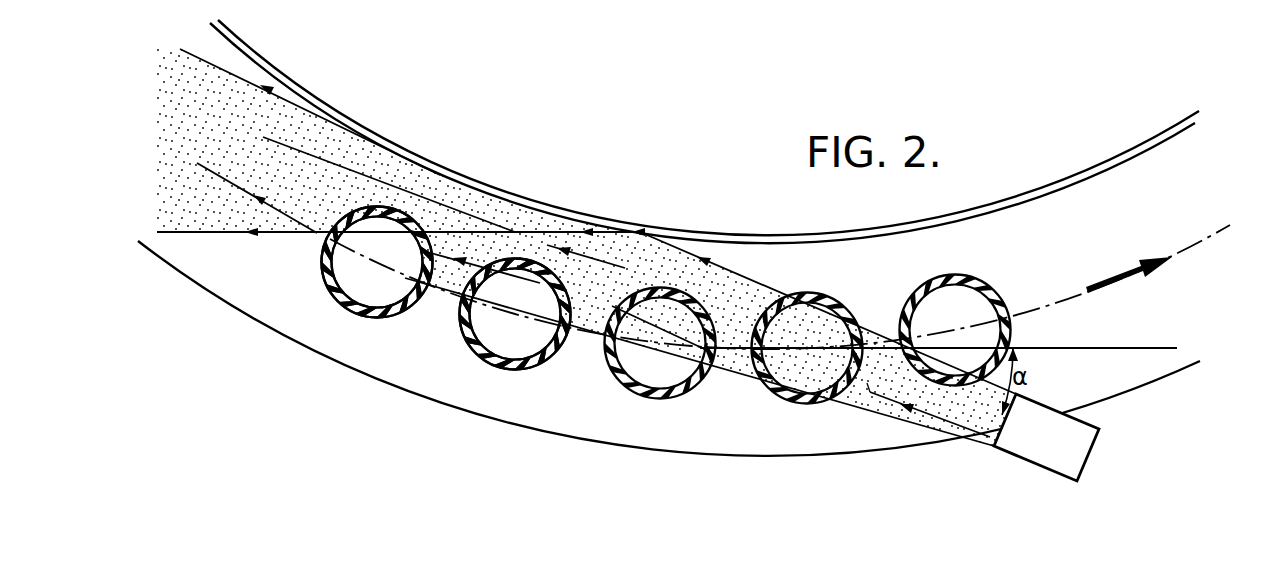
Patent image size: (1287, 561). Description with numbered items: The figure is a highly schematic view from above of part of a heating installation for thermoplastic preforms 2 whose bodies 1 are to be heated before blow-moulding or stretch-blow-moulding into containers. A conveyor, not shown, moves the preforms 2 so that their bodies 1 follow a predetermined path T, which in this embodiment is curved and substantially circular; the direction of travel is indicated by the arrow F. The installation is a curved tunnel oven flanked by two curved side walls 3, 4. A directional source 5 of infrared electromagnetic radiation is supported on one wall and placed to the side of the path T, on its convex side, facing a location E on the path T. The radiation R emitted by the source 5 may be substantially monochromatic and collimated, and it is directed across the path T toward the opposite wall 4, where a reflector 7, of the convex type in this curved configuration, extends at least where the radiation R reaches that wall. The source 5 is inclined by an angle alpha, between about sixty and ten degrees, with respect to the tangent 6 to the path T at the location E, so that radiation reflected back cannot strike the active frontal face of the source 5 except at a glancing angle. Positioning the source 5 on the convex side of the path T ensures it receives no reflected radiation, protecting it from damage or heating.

The body 1 is at (627, 387).
The preform 2 is at (347, 310).
The side wall 3 is at (877, 452).
The side wall 4 is at (733, 237).
The source of infrared electromagnetic radiation 5 is at (1048, 443).
The tangent 6 is at (1130, 350).
The reflector 7 is at (527, 215).
The location E is at (813, 348).
The path T is at (1050, 305).
The arrow indicating direction of travel F is at (1134, 273).
The infrared electromagnetic radiation R is at (867, 383).